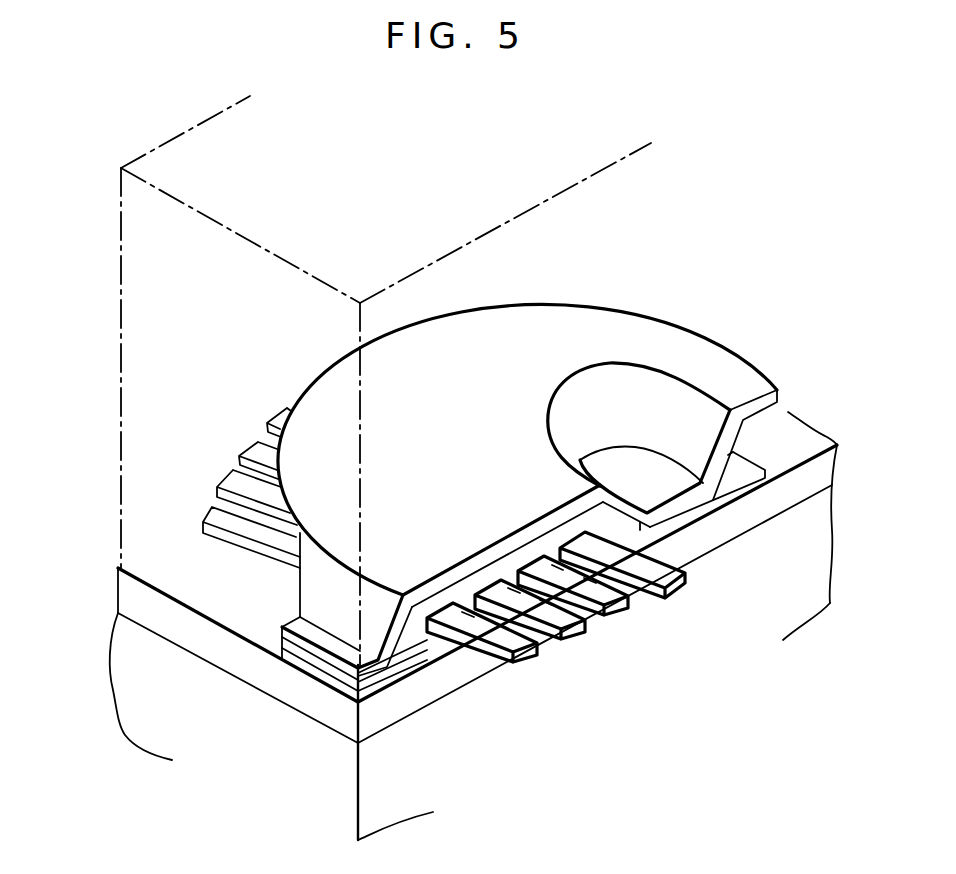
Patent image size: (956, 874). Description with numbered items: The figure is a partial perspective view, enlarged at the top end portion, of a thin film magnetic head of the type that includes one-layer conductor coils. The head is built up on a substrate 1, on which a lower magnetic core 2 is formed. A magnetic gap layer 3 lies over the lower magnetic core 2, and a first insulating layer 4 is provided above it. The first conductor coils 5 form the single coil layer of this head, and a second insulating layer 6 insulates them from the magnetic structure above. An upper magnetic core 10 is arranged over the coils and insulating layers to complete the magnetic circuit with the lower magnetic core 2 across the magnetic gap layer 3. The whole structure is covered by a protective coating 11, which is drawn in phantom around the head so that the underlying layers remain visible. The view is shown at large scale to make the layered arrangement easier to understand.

The substrate 1 is at (183, 733).
The lower magnetic core 2 is at (383, 687).
The magnetic gap layer 3 is at (413, 633).
The first insulating layer 4 is at (655, 520).
The first conductor coils 5 is at (535, 657).
The second insulating layer 6 is at (415, 658).
The upper magnetic core 10 is at (597, 338).
The protective coating 11 is at (133, 309).